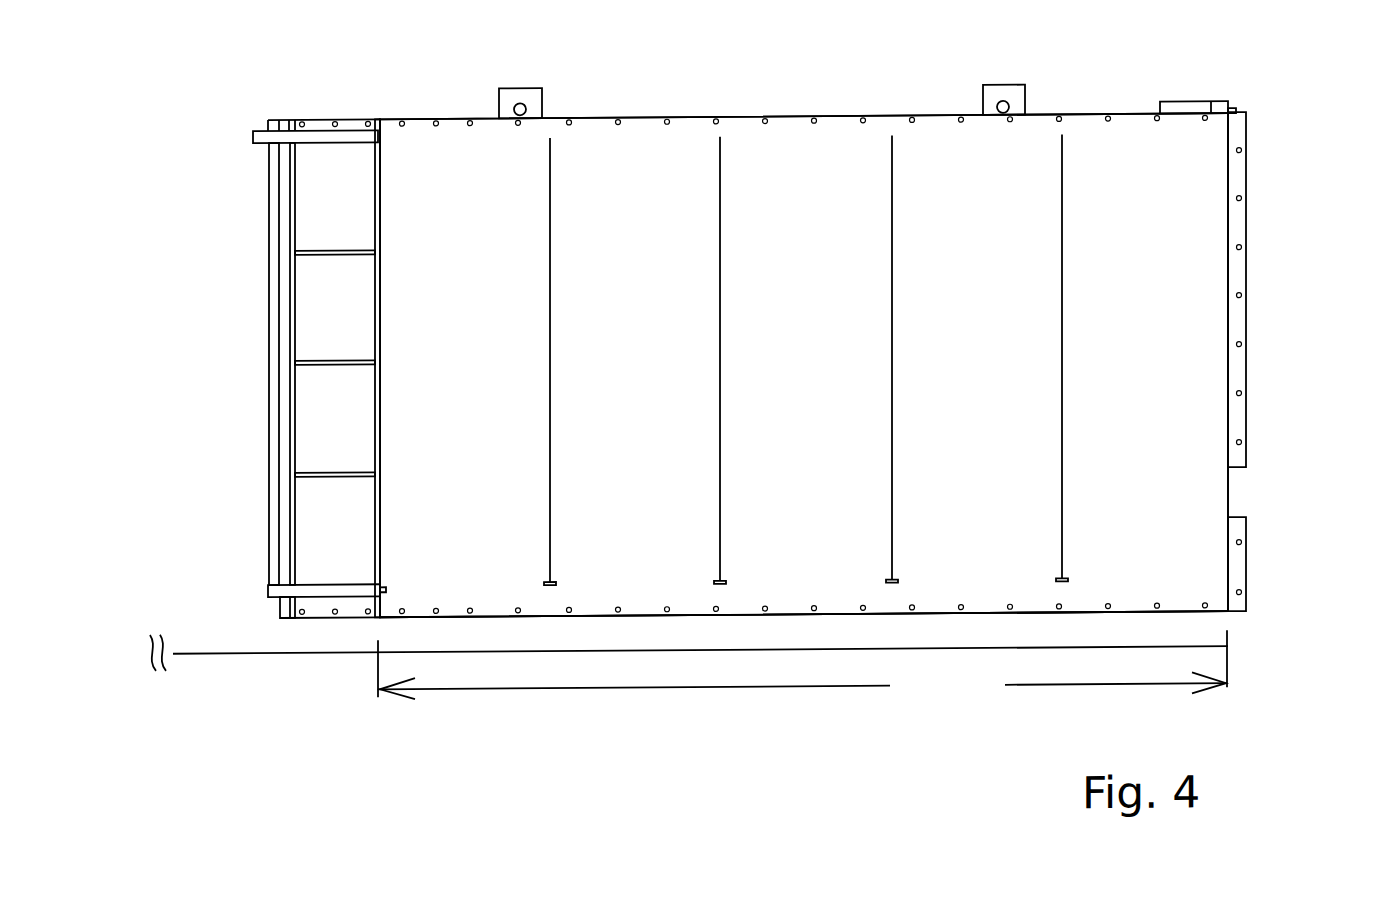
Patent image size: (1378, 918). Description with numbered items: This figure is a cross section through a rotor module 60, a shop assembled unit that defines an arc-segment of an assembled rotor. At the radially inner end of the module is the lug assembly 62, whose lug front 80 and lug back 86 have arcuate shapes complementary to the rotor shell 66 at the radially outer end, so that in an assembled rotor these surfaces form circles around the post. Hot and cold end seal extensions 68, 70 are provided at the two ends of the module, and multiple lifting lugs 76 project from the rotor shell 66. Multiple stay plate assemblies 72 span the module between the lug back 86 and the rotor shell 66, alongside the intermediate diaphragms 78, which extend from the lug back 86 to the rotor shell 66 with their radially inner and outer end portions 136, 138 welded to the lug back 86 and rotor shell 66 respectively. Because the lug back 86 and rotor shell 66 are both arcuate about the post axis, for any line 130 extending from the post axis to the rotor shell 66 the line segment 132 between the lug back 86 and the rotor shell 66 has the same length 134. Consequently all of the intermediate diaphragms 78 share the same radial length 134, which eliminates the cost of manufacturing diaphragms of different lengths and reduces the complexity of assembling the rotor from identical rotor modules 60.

The rotor module 60 is at (1275, 293).
The lug assembly 62 is at (323, 86).
The rotor shell 66 is at (1232, 494).
The hot end seal extension 68 is at (361, 121).
The cold end seal extension 70 is at (280, 613).
The stay plate assemblies 72 is at (552, 319).
The lifting lugs 76 is at (542, 96).
The intermediate diaphragms 78 is at (815, 377).
The lug front 80 is at (268, 364).
The lug back 86 is at (375, 206).
The line 130 is at (264, 655).
The line segment 132 is at (792, 655).
The length 134 is at (802, 671).
The radially inner end portion 136 is at (375, 324).
The radially outer end portion 138 is at (1245, 157).